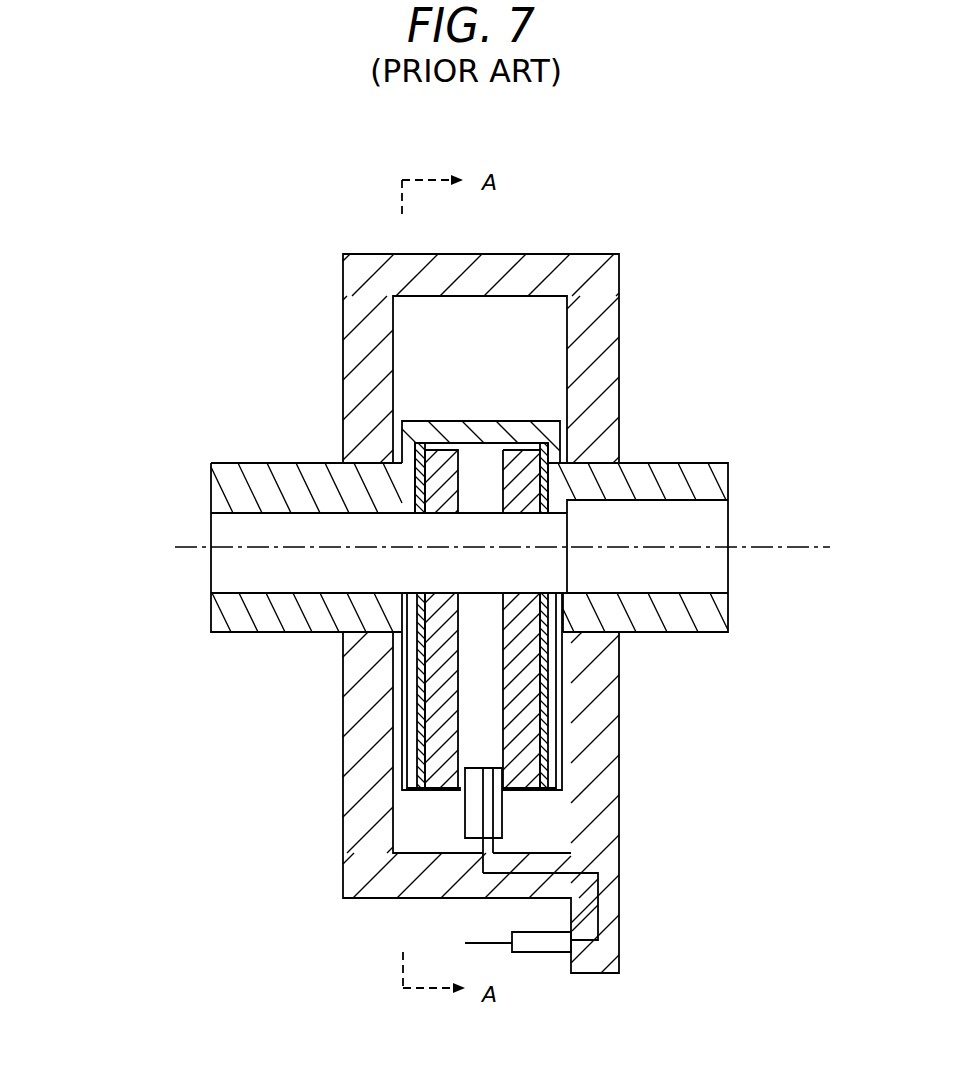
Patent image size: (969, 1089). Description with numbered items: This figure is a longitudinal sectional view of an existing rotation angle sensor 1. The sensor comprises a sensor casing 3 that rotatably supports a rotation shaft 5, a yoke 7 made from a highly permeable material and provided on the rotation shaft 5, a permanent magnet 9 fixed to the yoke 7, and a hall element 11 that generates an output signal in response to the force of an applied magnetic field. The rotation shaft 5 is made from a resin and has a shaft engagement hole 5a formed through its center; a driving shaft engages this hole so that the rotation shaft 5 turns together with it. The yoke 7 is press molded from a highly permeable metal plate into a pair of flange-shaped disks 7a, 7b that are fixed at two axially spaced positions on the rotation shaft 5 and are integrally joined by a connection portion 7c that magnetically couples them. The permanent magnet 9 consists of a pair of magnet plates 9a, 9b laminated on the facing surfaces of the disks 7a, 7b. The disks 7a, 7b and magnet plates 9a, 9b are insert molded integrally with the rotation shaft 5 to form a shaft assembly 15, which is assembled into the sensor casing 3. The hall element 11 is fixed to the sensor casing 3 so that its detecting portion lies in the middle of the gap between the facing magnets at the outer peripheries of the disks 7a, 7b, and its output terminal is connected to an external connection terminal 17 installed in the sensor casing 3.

The rotation angle sensor 1 is at (603, 241).
The sensor casing 3 is at (618, 328).
The rotation shaft 5 is at (673, 463).
The shaft engagement hole 5a is at (237, 528).
The yoke 7 is at (408, 616).
The disk 7a is at (424, 742).
The disk 7b is at (549, 708).
The connection portion 7c is at (484, 444).
The permanent magnet 9 is at (527, 612).
The magnet plate 9a is at (444, 770).
The magnet plate 9b is at (524, 780).
The hall element 11 is at (465, 823).
The shaft assembly 15 is at (293, 463).
The external connection terminal 17 is at (531, 948).